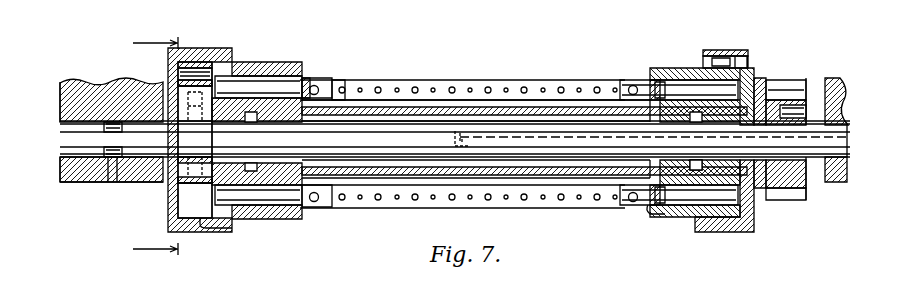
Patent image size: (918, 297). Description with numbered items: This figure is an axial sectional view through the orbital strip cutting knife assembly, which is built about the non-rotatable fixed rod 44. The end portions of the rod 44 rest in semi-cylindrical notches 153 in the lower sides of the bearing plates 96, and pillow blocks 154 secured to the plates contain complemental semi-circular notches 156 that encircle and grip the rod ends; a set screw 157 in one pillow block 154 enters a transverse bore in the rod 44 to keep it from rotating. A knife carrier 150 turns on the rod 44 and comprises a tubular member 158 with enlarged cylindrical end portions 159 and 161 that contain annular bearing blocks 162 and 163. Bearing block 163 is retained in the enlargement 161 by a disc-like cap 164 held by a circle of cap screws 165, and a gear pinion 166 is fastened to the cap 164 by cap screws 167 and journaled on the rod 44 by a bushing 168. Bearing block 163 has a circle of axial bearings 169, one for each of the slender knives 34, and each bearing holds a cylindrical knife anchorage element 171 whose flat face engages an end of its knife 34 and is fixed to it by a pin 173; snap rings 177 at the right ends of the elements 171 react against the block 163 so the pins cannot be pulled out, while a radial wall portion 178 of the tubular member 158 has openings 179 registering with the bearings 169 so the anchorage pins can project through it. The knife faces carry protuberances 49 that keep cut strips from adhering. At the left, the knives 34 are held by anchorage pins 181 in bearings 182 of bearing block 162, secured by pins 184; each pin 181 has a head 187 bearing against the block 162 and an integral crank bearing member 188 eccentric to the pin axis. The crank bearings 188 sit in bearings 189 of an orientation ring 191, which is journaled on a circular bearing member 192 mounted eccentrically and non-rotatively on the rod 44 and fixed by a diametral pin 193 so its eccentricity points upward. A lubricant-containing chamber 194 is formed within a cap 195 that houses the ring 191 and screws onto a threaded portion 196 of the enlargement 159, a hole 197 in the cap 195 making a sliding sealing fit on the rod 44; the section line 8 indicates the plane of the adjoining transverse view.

The section line 8- 8 is at (144, 146).
The strip cutting knives 34 is at (510, 74).
The fixed rod 44 is at (455, 139).
The protuberances 49 is at (487, 87).
The bearing plates 96 is at (77, 82).
The knife carrier 150 is at (500, 100).
The semi-cylindrical notches 153 is at (113, 82).
The pillow blocks 154 is at (88, 183).
The semi-circular notches 156 is at (122, 182).
The set screw 157 is at (110, 183).
The tubular member 158 is at (402, 108).
The enlarged end portion 159 is at (305, 80).
The enlarged end portion 161 is at (665, 68).
The bearing block 162 is at (319, 88).
The bearing block 163 is at (690, 110).
The cap 164 is at (761, 80).
The cap screws 165 is at (742, 52).
The gear pinion 166 is at (772, 92).
The cap screws 167 is at (770, 110).
The bushing 168 is at (776, 201).
The axial bearings 169 is at (660, 84).
The knife anchorage element 171 is at (650, 90).
The pin 173 is at (629, 88).
The snap rings 177 is at (728, 222).
The radial wall portion 178 is at (656, 212).
The openings 179 is at (650, 208).
The anchorage pins 181 is at (284, 202).
The bearings 182 is at (258, 220).
The pins 184 is at (340, 80).
The head 187 is at (270, 70).
The crank bearing member 188 is at (250, 84).
The bearings 189 is at (196, 62).
The orientation ring 191 is at (222, 70).
The circular bearing member 192 is at (185, 134).
The pin 193 is at (214, 134).
The lubricant-containing chamber 194 is at (190, 215).
The cap 195 is at (186, 233).
The threaded portion 196 is at (205, 228).
The hole 197 is at (149, 82).